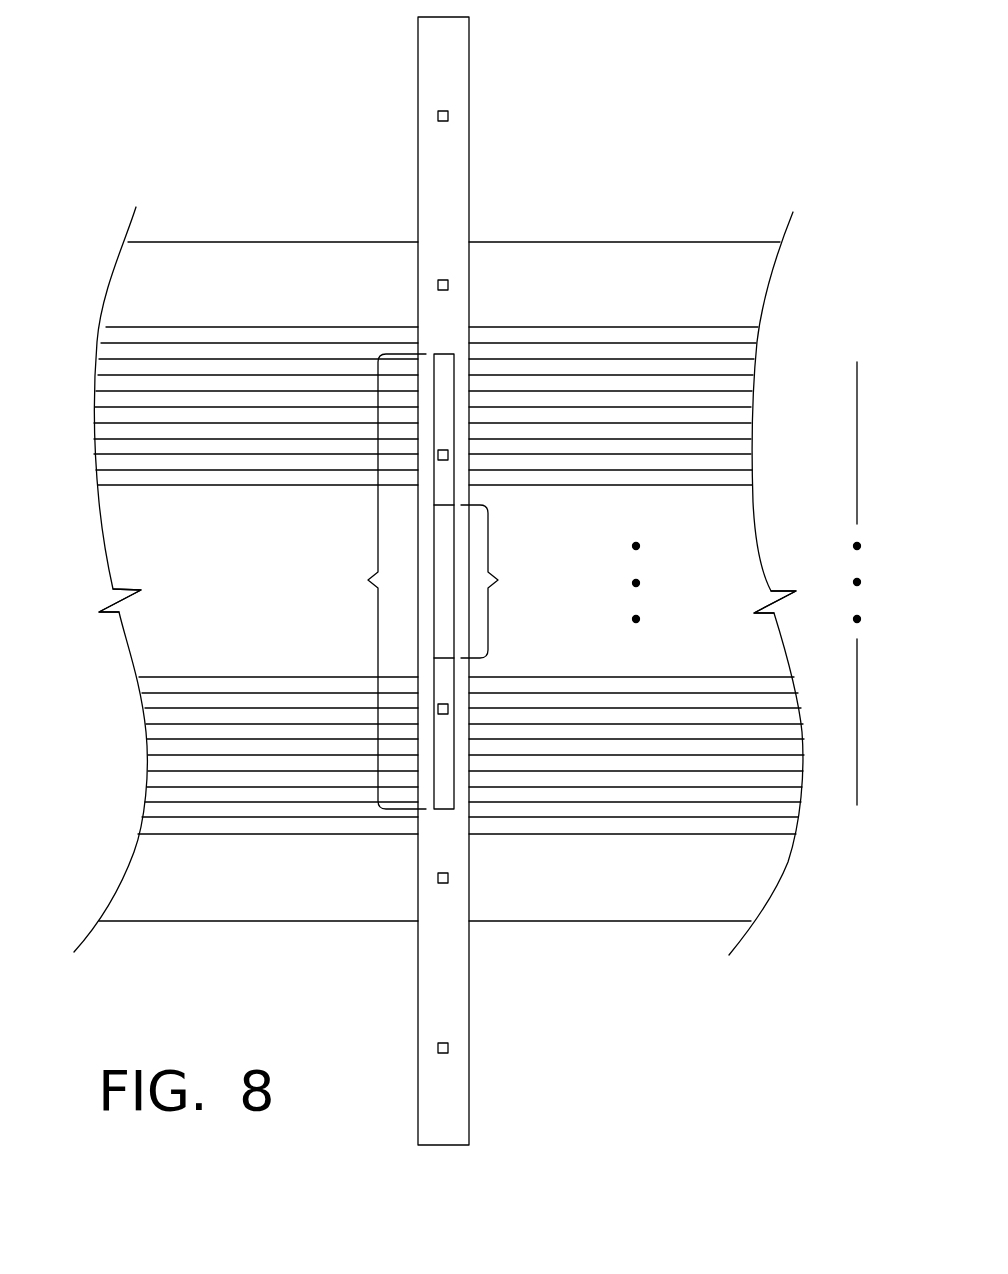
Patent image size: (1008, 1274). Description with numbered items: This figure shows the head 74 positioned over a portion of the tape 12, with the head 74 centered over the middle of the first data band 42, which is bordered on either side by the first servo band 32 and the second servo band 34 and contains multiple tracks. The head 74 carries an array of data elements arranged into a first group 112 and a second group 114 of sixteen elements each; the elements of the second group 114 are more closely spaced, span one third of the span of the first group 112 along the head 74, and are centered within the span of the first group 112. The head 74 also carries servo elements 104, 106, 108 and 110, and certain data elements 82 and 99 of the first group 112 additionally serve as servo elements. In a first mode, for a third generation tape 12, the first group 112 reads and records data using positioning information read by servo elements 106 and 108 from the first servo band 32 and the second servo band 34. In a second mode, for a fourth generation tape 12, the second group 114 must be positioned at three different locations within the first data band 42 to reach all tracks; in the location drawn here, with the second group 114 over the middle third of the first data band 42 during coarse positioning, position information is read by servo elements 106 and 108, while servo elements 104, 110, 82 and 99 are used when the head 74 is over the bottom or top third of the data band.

The tape 12 is at (283, 250).
The servo band 1 32 is at (123, 288).
The data band 1 42 is at (122, 538).
The servo band 2 34 is at (133, 878).
The head 74 is at (456, 42).
The data element 82 is at (448, 453).
The data element 99 is at (448, 707).
The servo element 104 is at (448, 112).
The servo element 106 is at (448, 282).
The servo element 108 is at (448, 875).
The servo element 110 is at (448, 1045).
The first group of data elements 112 is at (372, 581).
The second group of data elements 114 is at (507, 581).